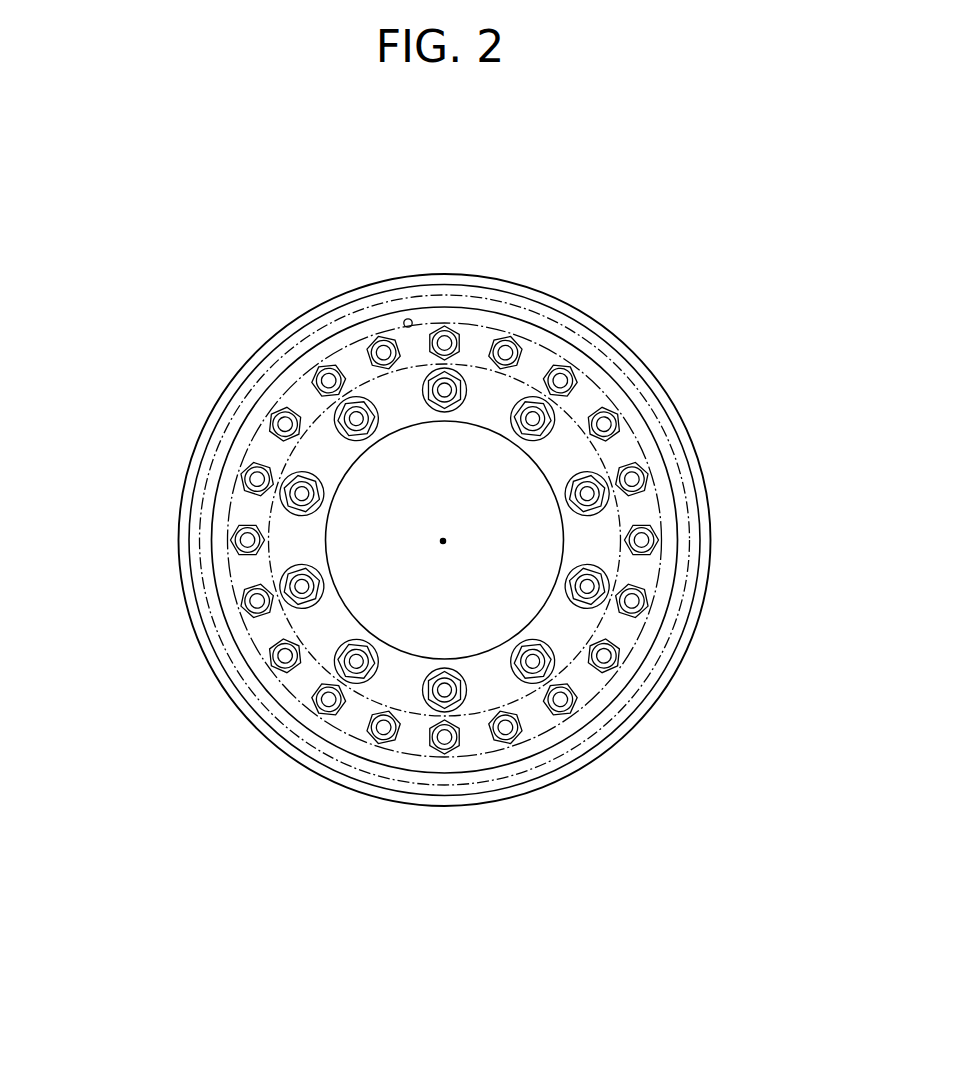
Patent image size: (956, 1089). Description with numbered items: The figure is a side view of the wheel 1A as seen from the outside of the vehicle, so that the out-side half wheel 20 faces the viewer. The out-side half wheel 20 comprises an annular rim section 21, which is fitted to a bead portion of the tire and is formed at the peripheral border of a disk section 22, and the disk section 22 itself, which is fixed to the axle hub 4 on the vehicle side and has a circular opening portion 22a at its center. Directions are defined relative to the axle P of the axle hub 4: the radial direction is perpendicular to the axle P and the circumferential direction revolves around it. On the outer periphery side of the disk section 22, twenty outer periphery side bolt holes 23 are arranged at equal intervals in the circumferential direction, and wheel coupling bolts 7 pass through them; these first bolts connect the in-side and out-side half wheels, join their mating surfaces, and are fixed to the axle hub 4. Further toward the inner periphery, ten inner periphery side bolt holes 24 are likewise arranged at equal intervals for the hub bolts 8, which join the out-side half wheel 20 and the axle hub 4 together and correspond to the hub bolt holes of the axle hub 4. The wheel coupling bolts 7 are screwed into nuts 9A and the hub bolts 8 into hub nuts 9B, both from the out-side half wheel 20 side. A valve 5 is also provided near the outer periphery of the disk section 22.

The wheel 1A is at (566, 285).
The rim section 21 is at (301, 318).
The out-side half wheel 20 is at (298, 402).
The disk section 22 is at (248, 511).
The circular opening portion 22a is at (443, 660).
The outer periphery side bolt holes 23 is at (563, 367).
The inner periphery side bolt holes 24 is at (607, 467).
The axle hub 4 is at (550, 542).
The valve 5 is at (411, 321).
The wheel coupling bolts 7 is at (443, 344).
The hub bolts 8 is at (444, 390).
The nuts 9A is at (382, 352).
The hub nuts 9B is at (443, 393).
The axle P is at (444, 544).